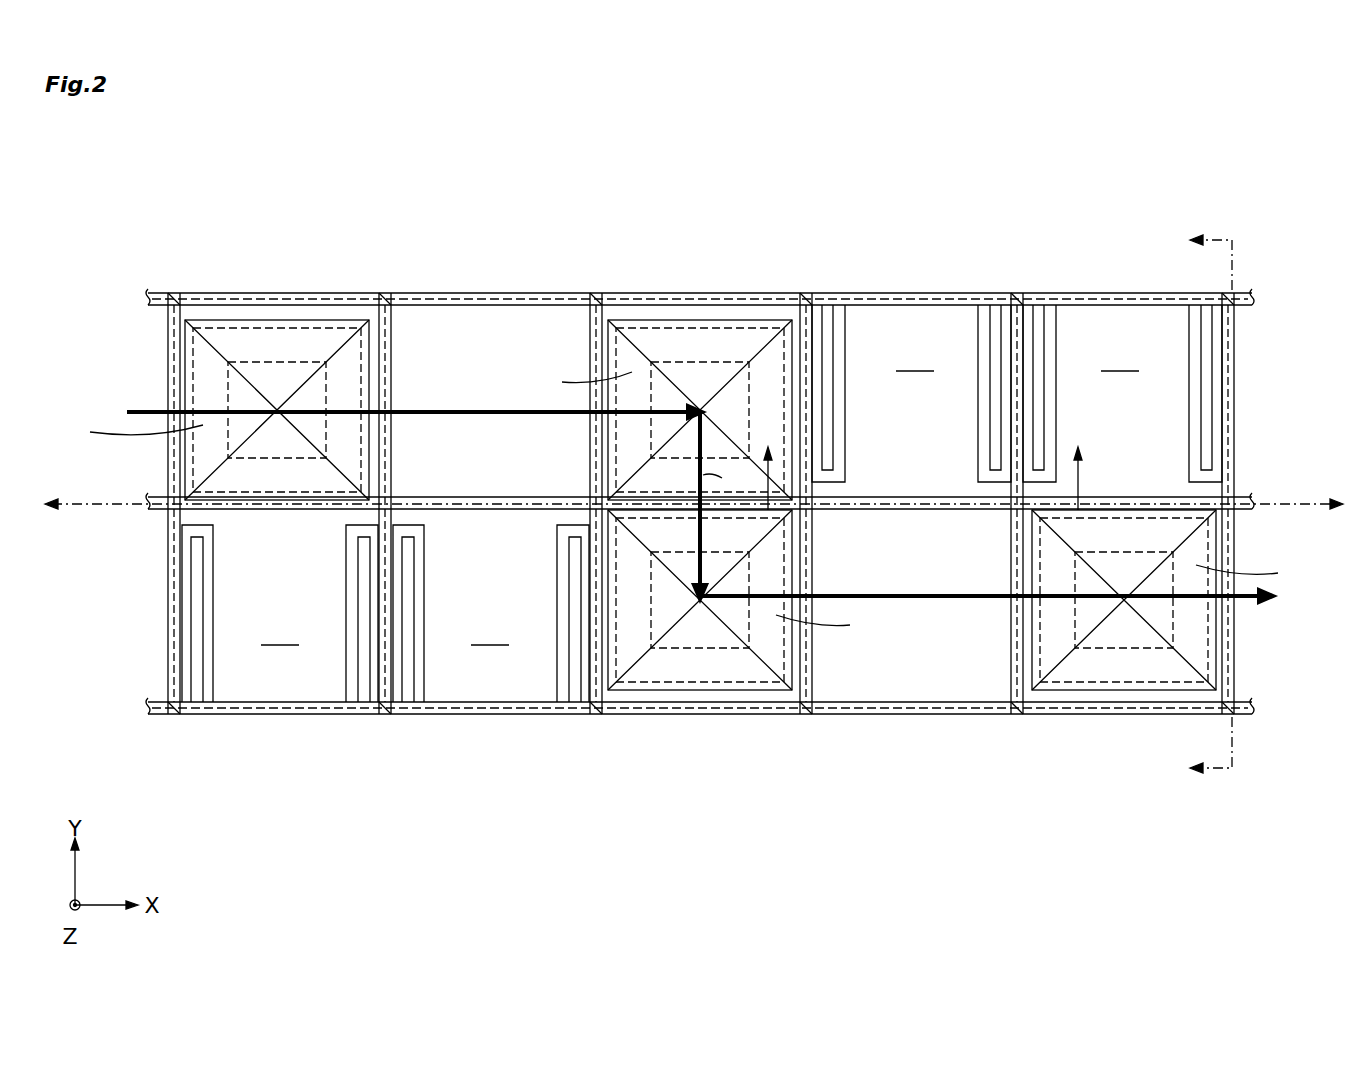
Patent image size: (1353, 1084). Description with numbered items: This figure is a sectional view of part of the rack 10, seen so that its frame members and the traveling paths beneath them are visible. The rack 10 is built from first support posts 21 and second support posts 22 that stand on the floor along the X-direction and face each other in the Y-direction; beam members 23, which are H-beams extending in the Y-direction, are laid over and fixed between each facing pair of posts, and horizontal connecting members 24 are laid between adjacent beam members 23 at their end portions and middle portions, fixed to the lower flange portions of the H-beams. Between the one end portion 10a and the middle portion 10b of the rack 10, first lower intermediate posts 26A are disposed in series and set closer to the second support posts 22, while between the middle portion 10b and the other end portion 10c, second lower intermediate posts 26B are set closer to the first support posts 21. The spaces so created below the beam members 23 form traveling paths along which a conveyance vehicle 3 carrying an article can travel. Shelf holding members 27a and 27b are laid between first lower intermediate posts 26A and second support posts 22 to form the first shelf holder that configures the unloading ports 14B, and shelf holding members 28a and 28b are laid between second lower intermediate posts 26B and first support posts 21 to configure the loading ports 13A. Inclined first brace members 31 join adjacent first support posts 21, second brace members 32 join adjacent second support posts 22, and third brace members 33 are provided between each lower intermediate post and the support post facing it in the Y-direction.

The conveyance vehicle 3 is at (215, 395).
The rack 10 is at (1085, 182).
The one end portion 10a is at (372, 491).
The middle portion 10b is at (656, 538).
The other end portion 10c is at (1022, 491).
The loading port 13A is at (1017, 393).
The unloading port 14B is at (385, 613).
The first support post 21 is at (174, 291).
The second support post 22 is at (176, 716).
The beam member 23 is at (695, 521).
The horizontal connecting member 24 is at (700, 499).
The first lower intermediate post 26A is at (168, 540).
The second lower intermediate post 26B is at (1235, 470).
The shelf holding member 27a is at (213, 662).
The shelf holding member 27b is at (346, 585).
The shelf holding member 28a is at (846, 337).
The shelf holding member 28b is at (977, 418).
The first brace member 31 is at (240, 294).
The second brace member 32 is at (652, 713).
The third brace member 33 is at (811, 330).